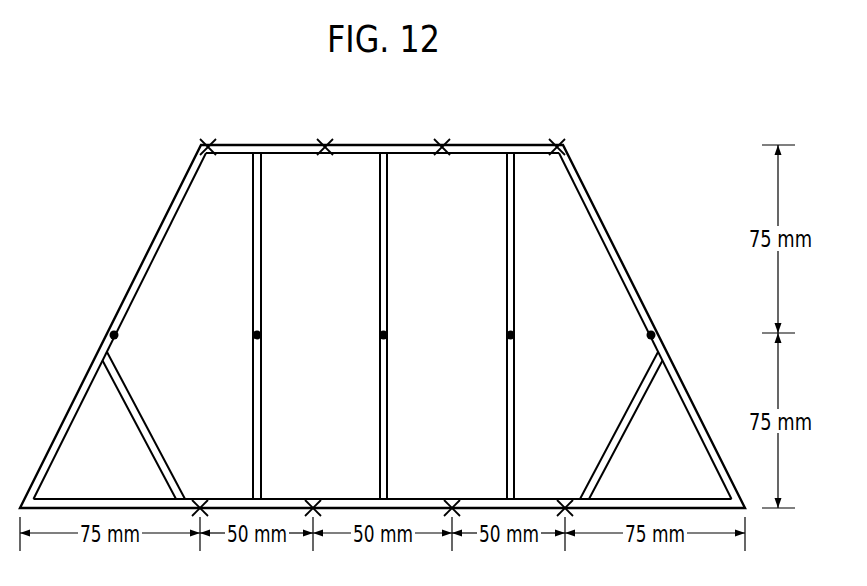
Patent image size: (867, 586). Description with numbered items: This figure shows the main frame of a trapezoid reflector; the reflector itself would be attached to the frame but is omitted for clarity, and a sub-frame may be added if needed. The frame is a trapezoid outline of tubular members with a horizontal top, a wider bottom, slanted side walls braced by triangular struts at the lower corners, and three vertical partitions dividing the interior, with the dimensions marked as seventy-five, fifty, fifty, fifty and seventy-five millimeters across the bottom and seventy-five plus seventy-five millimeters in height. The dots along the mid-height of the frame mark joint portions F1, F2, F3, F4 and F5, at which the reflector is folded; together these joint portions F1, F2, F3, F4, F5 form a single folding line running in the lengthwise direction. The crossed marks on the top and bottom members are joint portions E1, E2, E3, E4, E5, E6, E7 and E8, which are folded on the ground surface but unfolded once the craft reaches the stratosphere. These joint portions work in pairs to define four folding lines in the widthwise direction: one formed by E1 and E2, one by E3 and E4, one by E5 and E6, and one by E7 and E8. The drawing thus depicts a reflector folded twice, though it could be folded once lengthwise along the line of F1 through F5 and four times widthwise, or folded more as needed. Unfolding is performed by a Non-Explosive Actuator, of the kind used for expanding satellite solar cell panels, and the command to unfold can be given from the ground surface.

The joint portion E1 is at (200, 484).
The joint portion E2 is at (220, 169).
The joint portion E3 is at (311, 484).
The joint portion E4 is at (327, 169).
The joint portion E5 is at (447, 484).
The joint portion E6 is at (445, 169).
The joint portion E7 is at (561, 484).
The joint portion E8 is at (550, 169).
The joint portion F1 is at (135, 342).
The joint portion F2 is at (278, 341).
The joint portion F3 is at (401, 341).
The joint portion F4 is at (528, 341).
The joint portion F5 is at (634, 341).